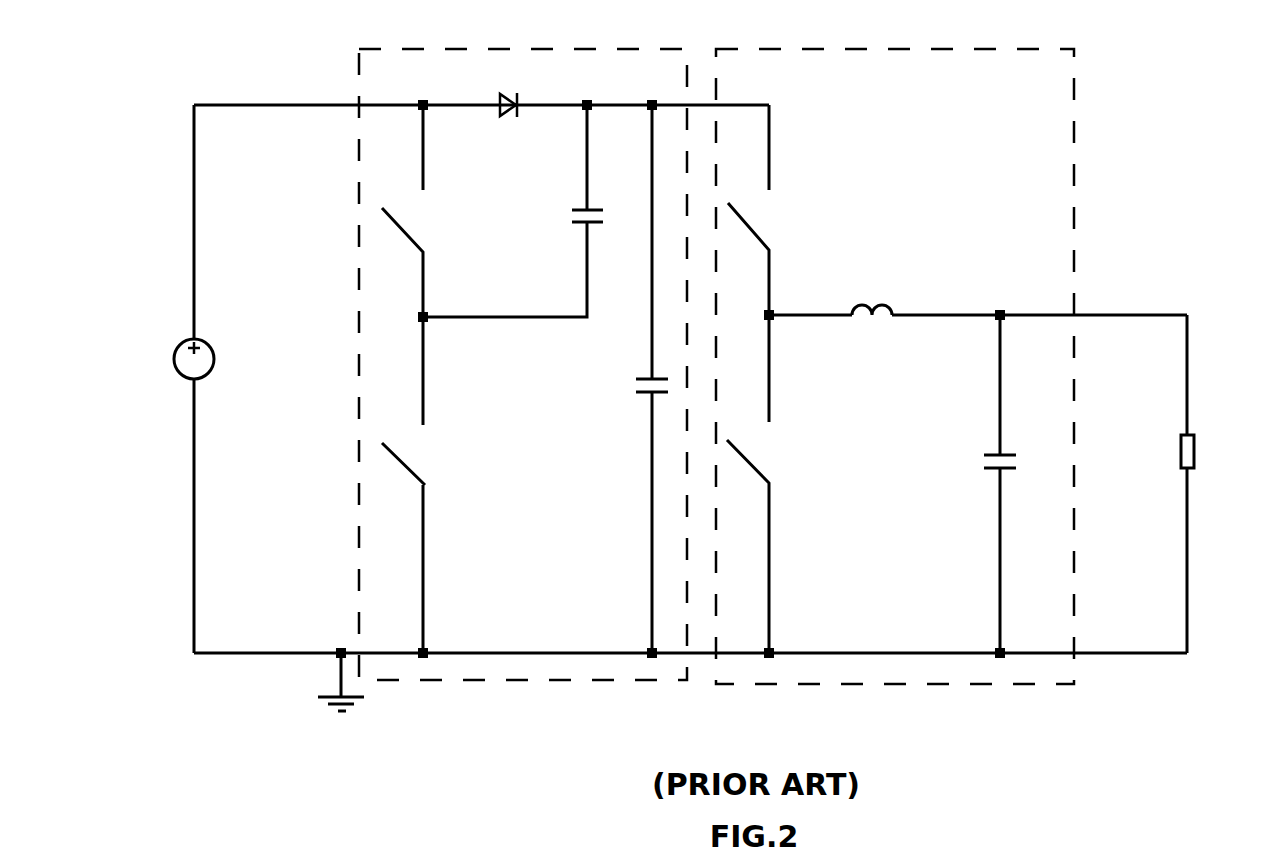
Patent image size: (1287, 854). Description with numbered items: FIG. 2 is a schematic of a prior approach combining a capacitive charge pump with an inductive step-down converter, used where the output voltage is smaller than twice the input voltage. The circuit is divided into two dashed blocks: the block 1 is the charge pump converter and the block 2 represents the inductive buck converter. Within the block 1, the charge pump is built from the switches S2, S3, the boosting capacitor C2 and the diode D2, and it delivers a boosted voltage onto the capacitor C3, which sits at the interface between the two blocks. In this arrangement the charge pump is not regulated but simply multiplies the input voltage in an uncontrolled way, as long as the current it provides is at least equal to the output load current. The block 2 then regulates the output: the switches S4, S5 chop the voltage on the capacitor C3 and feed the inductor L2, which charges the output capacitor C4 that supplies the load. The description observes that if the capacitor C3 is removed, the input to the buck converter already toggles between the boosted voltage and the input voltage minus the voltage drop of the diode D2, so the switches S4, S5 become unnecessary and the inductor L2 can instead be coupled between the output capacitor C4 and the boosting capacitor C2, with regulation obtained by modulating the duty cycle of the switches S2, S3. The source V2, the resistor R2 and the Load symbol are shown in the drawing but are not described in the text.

The block 1 is at (358, 303).
The block 2 is at (1074, 270).
The voltage source V2 is at (214, 359).
The diode D2 is at (506, 86).
The switch S2 is at (393, 211).
The switch S3 is at (400, 485).
The boosting capacitor C2 is at (580, 163).
The capacitor C3 is at (631, 379).
The switch S4 is at (742, 210).
The switch S5 is at (742, 484).
The inductor L2 is at (872, 292).
The output capacitor C4 is at (977, 484).
The load resistor R2 is at (1163, 451).
The load Load is at (1227, 491).